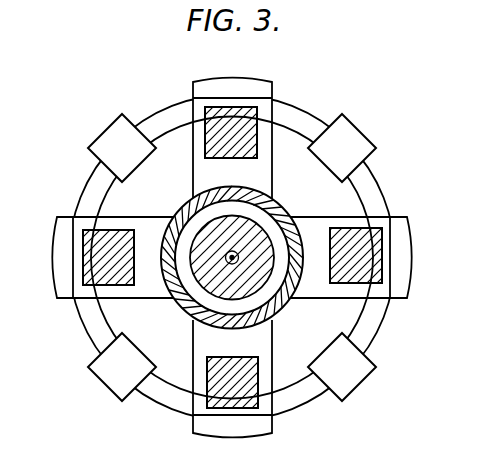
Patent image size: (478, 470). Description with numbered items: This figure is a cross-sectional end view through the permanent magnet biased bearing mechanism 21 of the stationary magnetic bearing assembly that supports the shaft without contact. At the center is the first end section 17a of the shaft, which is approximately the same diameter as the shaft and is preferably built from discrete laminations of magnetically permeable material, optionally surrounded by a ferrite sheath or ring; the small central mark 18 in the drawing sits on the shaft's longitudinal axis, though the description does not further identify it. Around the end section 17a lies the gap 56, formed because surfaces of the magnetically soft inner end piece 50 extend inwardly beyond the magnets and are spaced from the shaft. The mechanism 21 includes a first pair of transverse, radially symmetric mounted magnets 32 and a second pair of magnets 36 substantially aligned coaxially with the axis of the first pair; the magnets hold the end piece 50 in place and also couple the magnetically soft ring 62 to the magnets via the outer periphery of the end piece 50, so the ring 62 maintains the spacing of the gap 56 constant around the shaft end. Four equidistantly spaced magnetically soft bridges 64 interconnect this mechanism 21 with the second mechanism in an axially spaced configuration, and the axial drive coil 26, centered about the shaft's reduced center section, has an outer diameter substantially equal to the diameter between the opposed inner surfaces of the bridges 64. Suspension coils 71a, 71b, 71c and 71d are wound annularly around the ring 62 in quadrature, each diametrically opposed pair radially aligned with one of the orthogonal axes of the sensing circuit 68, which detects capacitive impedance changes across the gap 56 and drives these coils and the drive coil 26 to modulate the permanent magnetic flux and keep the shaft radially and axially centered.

The permanent magnet biased bearing mechanism 21 is at (240, 252).
The magnetically soft ring 62 is at (373, 176).
The axial drive coil 26 is at (177, 378).
The inner end piece 50 is at (305, 215).
The magnetically soft bridge 64 is at (245, 80).
The magnet 32 is at (258, 113).
The magnet 36 is at (374, 228).
The suspension coil 71a is at (113, 120).
The suspension coil 71b is at (362, 372).
The suspension coil 71c is at (361, 128).
The suspension coil 71d is at (107, 388).
The sensing circuit 68 is at (168, 205).
The gap 56 is at (287, 305).
The first end section 17a is at (208, 222).
The shaft 18 is at (239, 259).